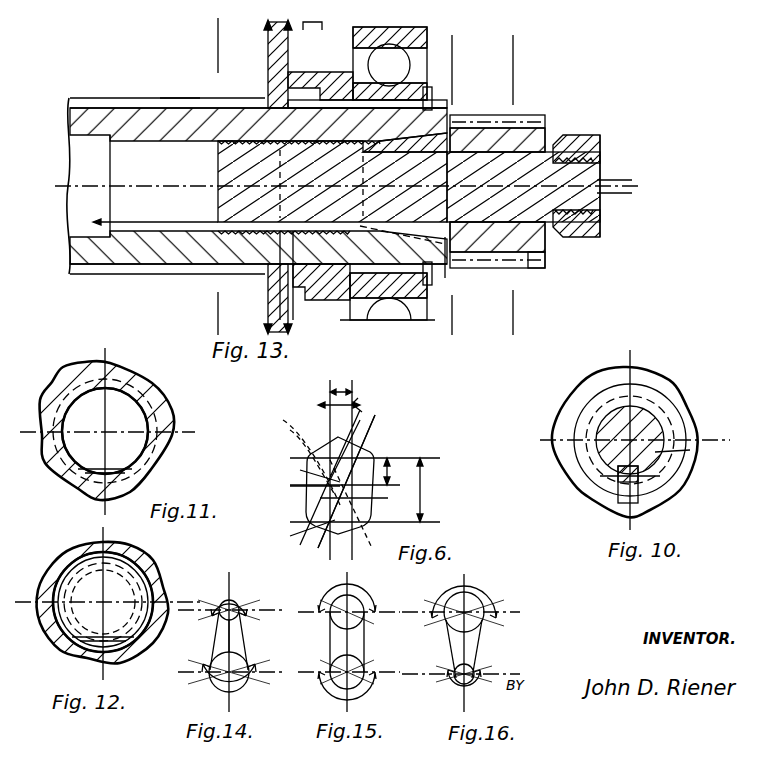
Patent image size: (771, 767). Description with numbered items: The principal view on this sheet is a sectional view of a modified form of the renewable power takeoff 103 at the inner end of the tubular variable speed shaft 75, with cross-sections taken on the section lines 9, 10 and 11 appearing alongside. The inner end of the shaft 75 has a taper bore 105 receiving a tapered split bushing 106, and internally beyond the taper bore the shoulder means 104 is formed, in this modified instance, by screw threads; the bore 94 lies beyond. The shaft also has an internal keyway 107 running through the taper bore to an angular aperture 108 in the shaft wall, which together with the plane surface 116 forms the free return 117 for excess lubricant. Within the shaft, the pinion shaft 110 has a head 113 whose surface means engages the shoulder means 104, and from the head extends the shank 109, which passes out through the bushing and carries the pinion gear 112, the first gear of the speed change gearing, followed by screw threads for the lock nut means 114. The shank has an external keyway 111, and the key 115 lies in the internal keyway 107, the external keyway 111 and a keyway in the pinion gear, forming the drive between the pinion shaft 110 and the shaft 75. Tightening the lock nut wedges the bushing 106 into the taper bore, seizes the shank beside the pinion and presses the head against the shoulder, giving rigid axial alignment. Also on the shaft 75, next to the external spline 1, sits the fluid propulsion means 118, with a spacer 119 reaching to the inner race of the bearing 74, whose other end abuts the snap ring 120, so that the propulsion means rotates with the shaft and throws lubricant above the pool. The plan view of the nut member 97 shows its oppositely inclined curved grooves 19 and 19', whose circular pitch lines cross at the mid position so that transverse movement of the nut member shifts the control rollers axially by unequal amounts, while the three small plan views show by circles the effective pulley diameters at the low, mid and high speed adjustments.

In FIG. 13, the external spline 1 is at (168, 98).
In FIG. 13, the section line 9— 9 is at (515, 60).
In FIG. 13, the section line 10— 10 is at (454, 60).
In FIG. 13, the section line 11— 11 is at (216, 56).
In FIG. 13, the bearing 74 is at (418, 40).
In FIG. 13, the variable speed shaft 75 is at (136, 98).
In FIG. 11, the variable speed shaft 75 is at (158, 458).
In FIG. 12, the variable speed shaft 75 is at (152, 574).
In FIG. 10, the variable speed shaft 75 is at (670, 386).
In FIG. 13, the bore 94 is at (70, 135).
In FIG. 11, the bore 94 is at (83, 508).
In FIG. 12, the bore 94 is at (90, 556).
In FIG. 13, the renewable power takeoff 103 is at (316, 17).
In FIG. 13, the shoulder means 104 is at (250, 139).
In FIG. 11, the shoulder means 104 is at (130, 358).
In FIG. 12, the shoulder means 104 is at (128, 556).
In FIG. 13, the taper bore 105 is at (438, 140).
In FIG. 13, the tapered split bushing 106 is at (450, 118).
In FIG. 10, the tapered split bushing 106 is at (668, 412).
In FIG. 13, the internal keyway 107 is at (348, 298).
In FIG. 10, the internal keyway 107 is at (616, 494).
In FIG. 13, the angular aperture 108 is at (300, 300).
In FIG. 13, the shank 109 is at (326, 104).
In FIG. 13, the pinion shaft 110 is at (552, 150).
In FIG. 10, the pinion shaft 110 is at (652, 432).
In FIG. 13, the external keyway 111 is at (540, 270).
In FIG. 10, the external keyway 111 is at (692, 450).
In FIG. 13, the pinion gear 112 is at (520, 118).
In FIG. 13, the head 113 is at (218, 156).
In FIG. 11, the head 113 is at (150, 420).
In FIG. 12, the head 113 is at (60, 570).
In FIG. 13, the lock nut means 114 is at (596, 134).
In FIG. 13, the key 115 is at (458, 266).
In FIG. 10, the key 115 is at (640, 480).
In FIG. 13, the plane surface 116 is at (218, 229).
In FIG. 11, the plane surface 116 is at (60, 480).
In FIG. 12, the plane surface 116 is at (78, 650).
In FIG. 13, the free return 117 is at (270, 322).
In FIG. 13, the fluid propulsion means 118 is at (268, 44).
In FIG. 13, the spacer 119 is at (292, 72).
In FIG. 13, the snap ring 120 is at (432, 90).
In FIG. 6, the curved groove 19 is at (353, 470).
In FIG. 6, the curved groove 19' is at (305, 458).
In FIG. 6, the nut member 97 is at (300, 500).